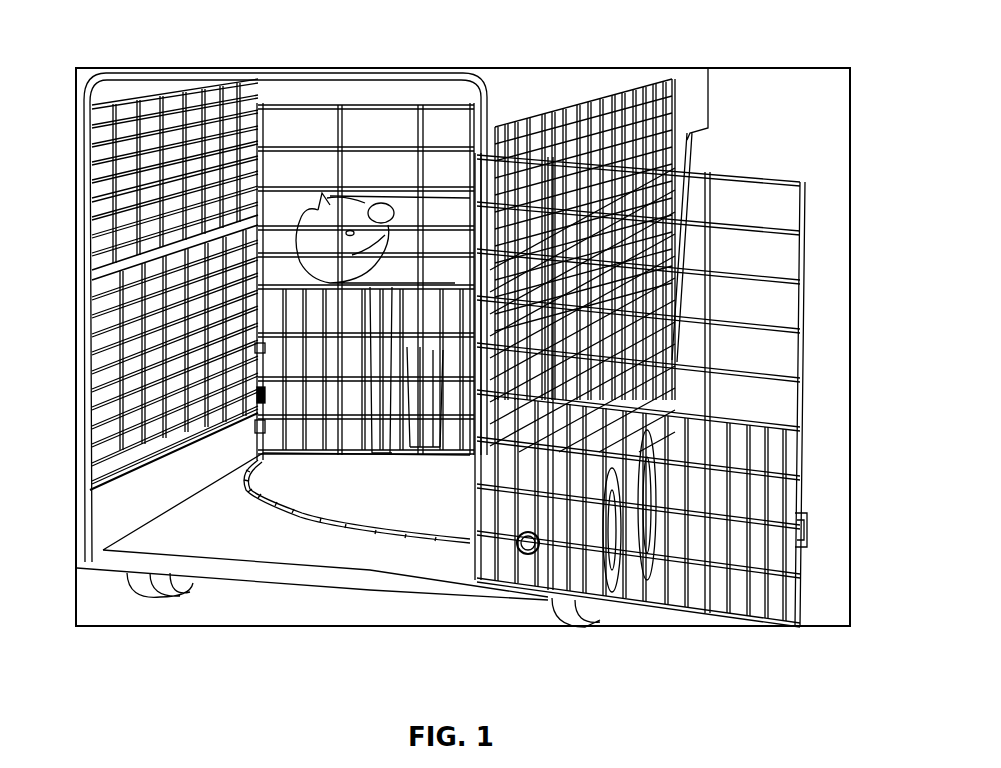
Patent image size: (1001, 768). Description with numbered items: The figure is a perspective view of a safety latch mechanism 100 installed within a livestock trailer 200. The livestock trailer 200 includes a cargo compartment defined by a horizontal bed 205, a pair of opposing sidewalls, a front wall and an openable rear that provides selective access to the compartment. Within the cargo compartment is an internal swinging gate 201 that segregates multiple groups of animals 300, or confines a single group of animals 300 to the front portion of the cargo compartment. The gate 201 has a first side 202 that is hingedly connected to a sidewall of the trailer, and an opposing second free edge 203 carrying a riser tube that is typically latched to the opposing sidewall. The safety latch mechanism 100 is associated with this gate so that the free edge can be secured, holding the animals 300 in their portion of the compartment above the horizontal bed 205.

The safety latch mechanism 100 is at (240, 441).
The livestock trailer 200 is at (535, 82).
The internal swinging gate 201 is at (283, 223).
The first side 202 is at (477, 217).
The second free edge 203 is at (800, 310).
The horizontal bed 205 is at (235, 550).
The animals 300 is at (353, 205).